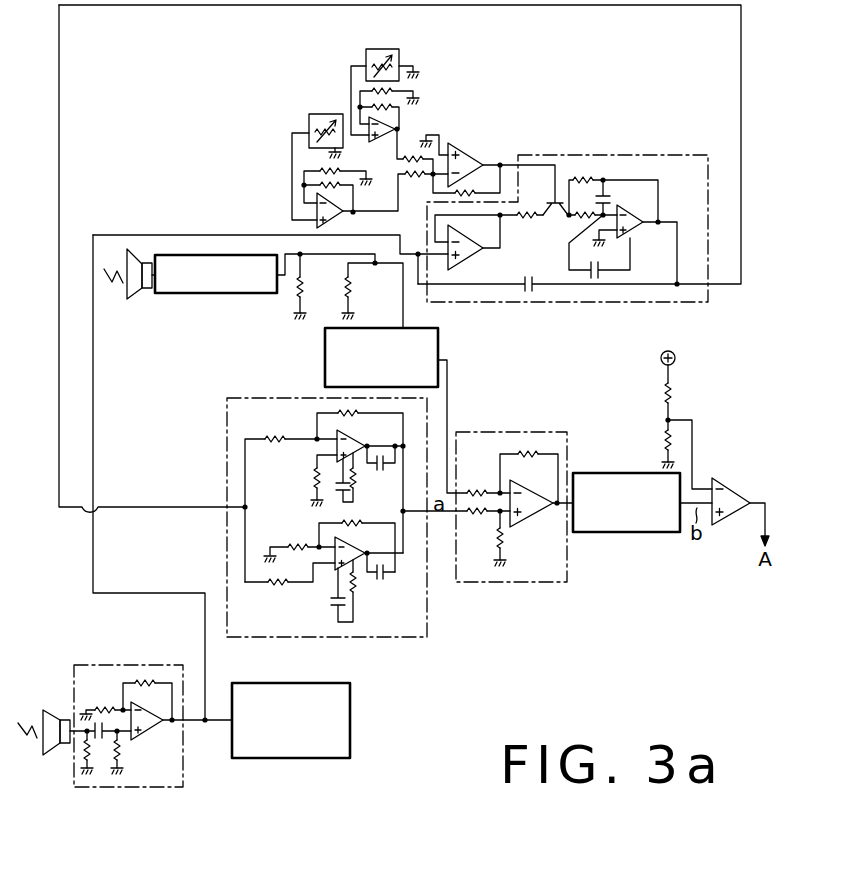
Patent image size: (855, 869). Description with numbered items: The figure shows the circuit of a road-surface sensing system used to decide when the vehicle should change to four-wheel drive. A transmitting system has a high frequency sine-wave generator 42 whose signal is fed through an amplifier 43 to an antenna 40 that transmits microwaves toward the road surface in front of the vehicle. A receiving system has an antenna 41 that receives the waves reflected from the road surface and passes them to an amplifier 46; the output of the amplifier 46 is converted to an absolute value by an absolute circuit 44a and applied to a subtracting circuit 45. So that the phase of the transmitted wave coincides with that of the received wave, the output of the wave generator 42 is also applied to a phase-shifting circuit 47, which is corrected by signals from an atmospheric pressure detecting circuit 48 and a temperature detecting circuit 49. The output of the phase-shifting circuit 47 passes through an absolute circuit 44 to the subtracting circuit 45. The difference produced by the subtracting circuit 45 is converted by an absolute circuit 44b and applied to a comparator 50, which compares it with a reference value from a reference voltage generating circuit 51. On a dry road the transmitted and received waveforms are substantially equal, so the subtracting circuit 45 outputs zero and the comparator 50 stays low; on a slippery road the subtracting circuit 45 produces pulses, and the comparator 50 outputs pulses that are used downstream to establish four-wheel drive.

The antenna 40 is at (47, 757).
The antenna 41 is at (130, 300).
The high frequency sine-wave generator 42 is at (296, 759).
The amplifier 43 is at (150, 788).
The absolute circuit 44 is at (393, 637).
The absolute circuit 44a is at (439, 333).
The absolute circuit 44b is at (637, 533).
The subtracting circuit 45 is at (548, 432).
The amplifier 46 is at (216, 294).
The phase-shifting circuit 47 is at (630, 155).
The atmospheric pressure detecting circuit 48 is at (399, 52).
The temperature detecting circuit 49 is at (309, 116).
The comparator 50 is at (738, 492).
The reference voltage generating circuit 51 is at (675, 400).